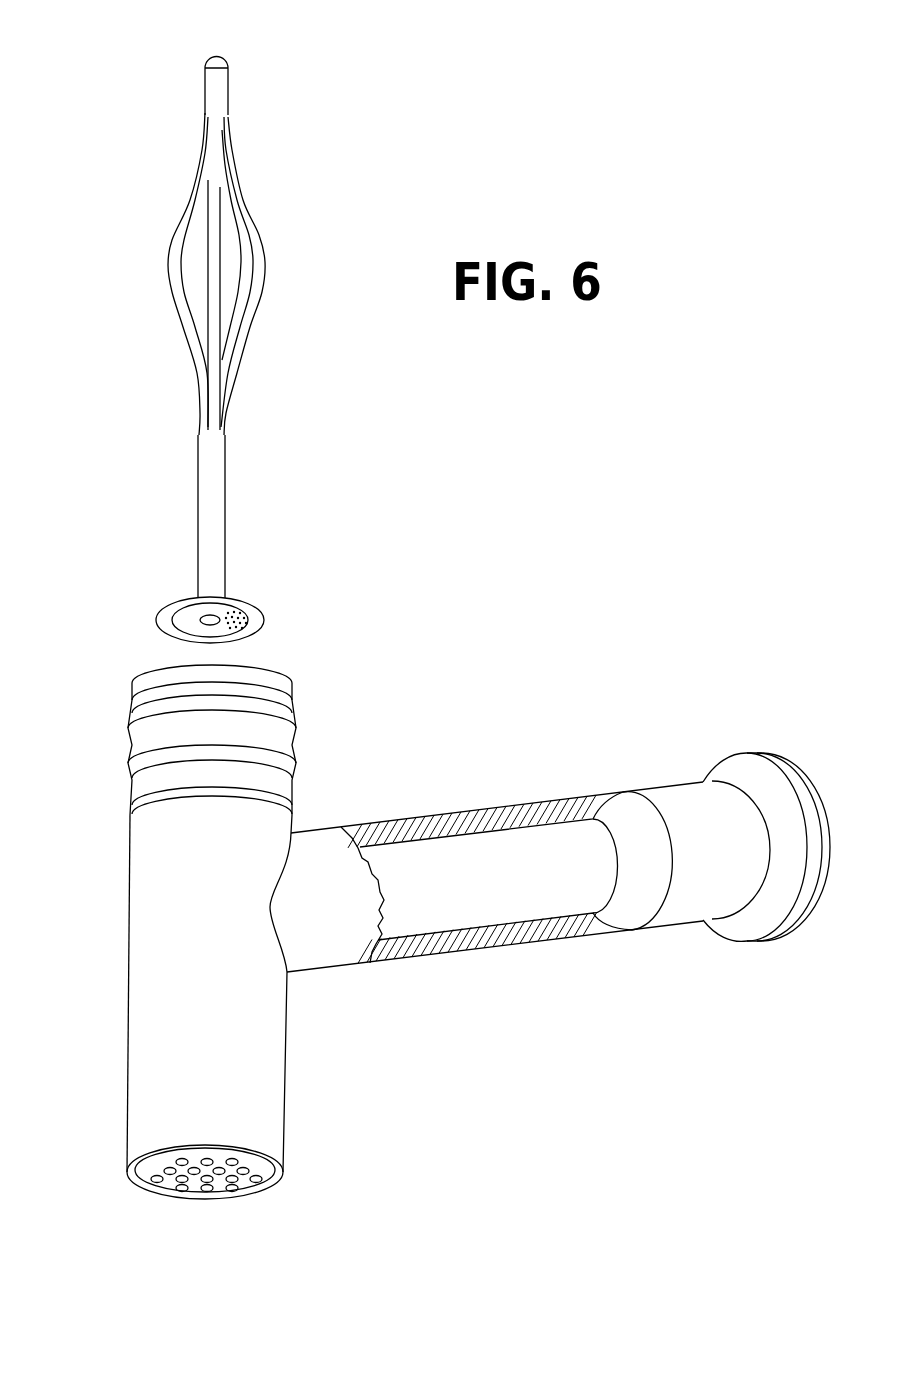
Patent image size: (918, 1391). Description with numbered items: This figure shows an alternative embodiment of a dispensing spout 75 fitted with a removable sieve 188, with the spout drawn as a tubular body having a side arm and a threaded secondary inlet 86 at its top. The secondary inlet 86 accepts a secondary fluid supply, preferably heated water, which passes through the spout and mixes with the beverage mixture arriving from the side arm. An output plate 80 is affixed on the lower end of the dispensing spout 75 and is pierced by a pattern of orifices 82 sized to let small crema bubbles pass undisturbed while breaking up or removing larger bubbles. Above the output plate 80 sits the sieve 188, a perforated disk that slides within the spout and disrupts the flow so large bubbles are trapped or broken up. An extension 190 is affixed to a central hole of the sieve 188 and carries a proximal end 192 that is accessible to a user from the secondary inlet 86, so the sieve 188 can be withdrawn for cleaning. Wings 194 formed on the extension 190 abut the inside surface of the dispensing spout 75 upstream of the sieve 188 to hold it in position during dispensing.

The proximal end 192 is at (218, 57).
The wings 194 is at (228, 243).
The extension 190 is at (211, 490).
The sieve 188 is at (240, 627).
The secondary inlet 86 is at (72, 790).
The dispensing spout 75 is at (530, 848).
The output plate 80 is at (252, 1188).
The orifices 82 is at (183, 1190).